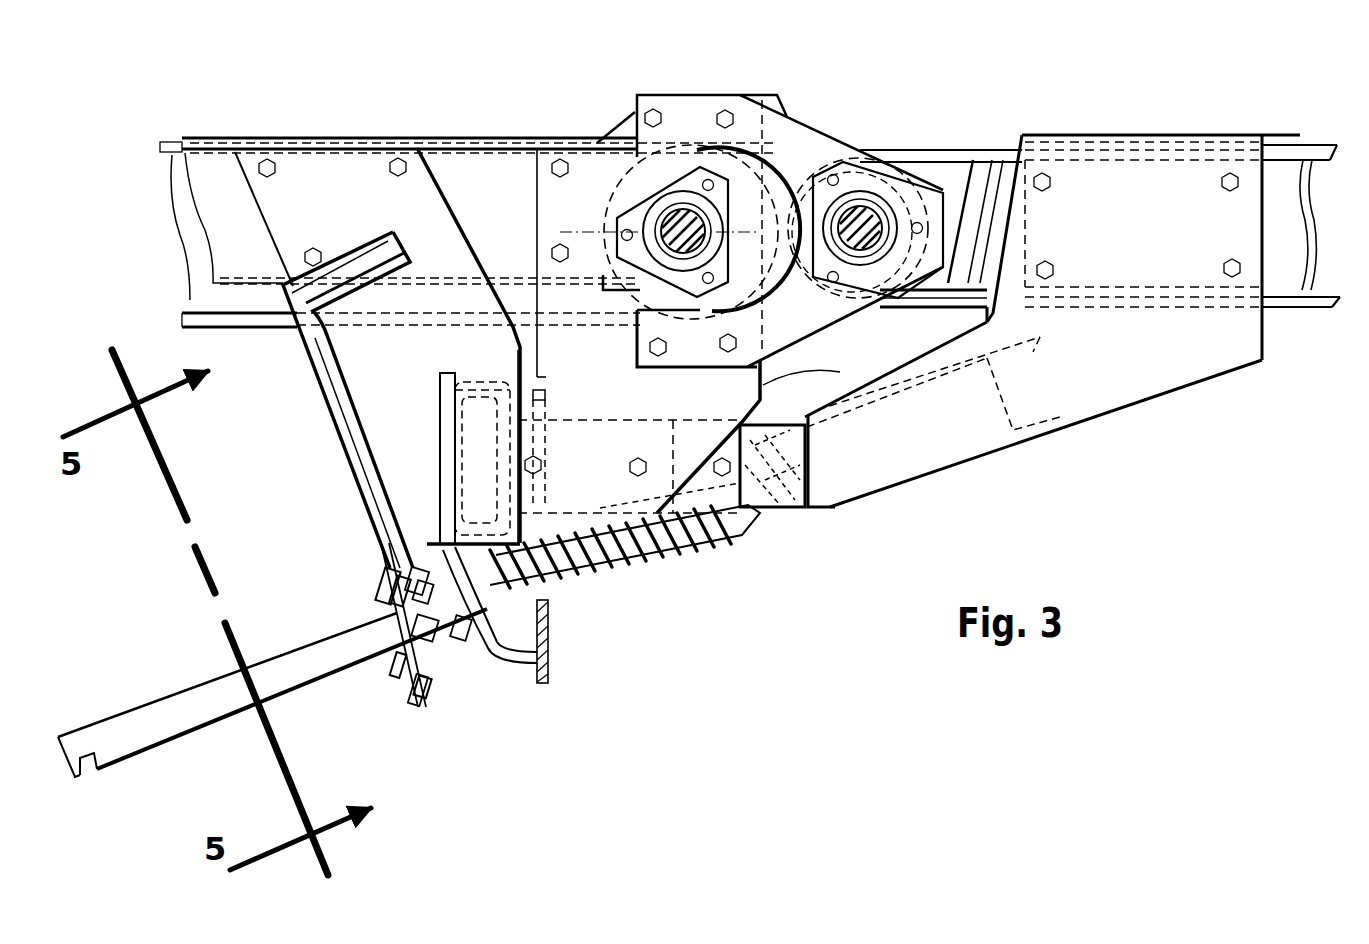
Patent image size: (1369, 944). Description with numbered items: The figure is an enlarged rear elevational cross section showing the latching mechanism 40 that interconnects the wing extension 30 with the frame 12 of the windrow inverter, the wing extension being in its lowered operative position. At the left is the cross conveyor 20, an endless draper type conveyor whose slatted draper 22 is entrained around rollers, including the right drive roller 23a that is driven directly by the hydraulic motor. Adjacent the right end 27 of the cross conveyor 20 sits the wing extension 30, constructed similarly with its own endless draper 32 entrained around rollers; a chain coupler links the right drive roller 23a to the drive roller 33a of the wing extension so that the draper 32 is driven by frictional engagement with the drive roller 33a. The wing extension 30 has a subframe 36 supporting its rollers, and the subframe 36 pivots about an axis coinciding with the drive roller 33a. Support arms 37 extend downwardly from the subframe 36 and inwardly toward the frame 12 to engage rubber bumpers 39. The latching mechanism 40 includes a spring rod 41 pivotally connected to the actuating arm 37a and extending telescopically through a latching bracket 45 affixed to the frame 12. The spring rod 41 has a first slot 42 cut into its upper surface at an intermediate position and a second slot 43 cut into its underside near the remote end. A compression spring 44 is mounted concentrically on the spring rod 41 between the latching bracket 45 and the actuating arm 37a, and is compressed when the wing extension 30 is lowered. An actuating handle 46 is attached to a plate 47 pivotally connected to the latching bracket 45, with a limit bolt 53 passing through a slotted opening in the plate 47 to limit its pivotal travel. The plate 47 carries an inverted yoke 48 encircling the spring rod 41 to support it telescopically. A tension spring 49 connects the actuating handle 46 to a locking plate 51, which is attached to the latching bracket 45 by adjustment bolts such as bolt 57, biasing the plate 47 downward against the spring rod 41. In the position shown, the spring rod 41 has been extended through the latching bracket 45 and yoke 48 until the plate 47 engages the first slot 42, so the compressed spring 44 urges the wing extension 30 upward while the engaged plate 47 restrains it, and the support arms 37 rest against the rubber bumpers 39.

The frame 12 is at (763, 385).
The cross conveyor 20 is at (296, 108).
The slatted draper 22 is at (180, 233).
The right drive roller 23a is at (612, 150).
The right end 27 is at (752, 80).
The wing extension 30 is at (1225, 86).
The endless draper 32 is at (1307, 190).
The drive roller 33a is at (930, 190).
The subframe 36 is at (1282, 258).
The support arms 37 is at (993, 452).
The actuating arm 37a is at (893, 473).
The rubber bumpers 39 is at (777, 512).
The latching mechanism 40 is at (670, 610).
The spring rod 41 is at (166, 697).
The first slot 42 is at (362, 598).
The second slot 43 is at (92, 768).
The compression spring 44 is at (703, 545).
The latching bracket 45 is at (517, 672).
The actuating handle 46 is at (328, 410).
The plate 47 is at (395, 568).
The yoke 48 is at (397, 633).
The tension spring 49 is at (433, 677).
The locking plate 51 is at (417, 680).
The limit bolt 53 is at (382, 583).
The adjustment bolt 57 is at (393, 665).